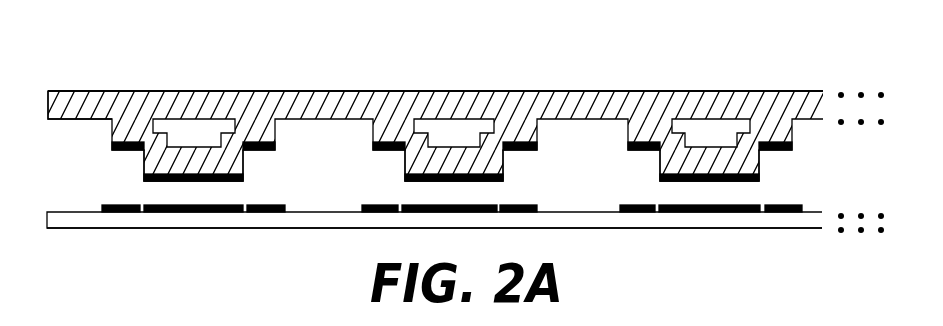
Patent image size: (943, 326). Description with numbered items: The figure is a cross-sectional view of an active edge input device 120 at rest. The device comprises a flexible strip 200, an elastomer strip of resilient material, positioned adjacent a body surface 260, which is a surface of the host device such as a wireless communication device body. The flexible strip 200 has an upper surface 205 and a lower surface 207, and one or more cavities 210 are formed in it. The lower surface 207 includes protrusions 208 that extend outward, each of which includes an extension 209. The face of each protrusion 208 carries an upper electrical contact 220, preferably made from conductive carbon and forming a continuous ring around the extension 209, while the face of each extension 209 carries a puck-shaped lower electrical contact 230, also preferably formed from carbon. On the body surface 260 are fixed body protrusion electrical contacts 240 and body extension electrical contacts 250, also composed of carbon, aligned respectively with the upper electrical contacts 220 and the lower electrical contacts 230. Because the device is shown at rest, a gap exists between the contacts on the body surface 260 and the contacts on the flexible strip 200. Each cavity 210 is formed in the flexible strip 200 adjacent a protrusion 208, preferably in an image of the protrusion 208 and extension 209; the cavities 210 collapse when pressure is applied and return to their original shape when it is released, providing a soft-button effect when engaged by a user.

The active edge input device 120 is at (613, 61).
The flexible strip 200 is at (773, 90).
The upper surface 205 is at (112, 90).
The lower surface 207 is at (71, 119).
The protrusion 208 is at (111, 141).
The extension 209 is at (243, 164).
The cavity 210 is at (218, 142).
The upper electrical contact 220 is at (270, 141).
The lower electrical contact 230 is at (463, 163).
The body protrusion electrical contact 240 is at (112, 212).
The body extension electrical contact 250 is at (177, 212).
The body surface 260 is at (306, 226).